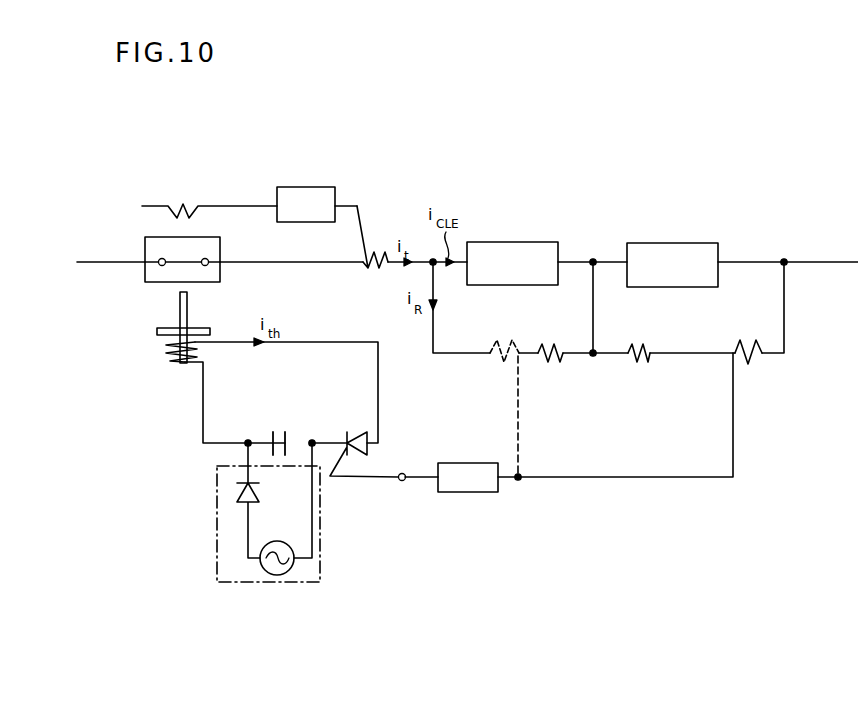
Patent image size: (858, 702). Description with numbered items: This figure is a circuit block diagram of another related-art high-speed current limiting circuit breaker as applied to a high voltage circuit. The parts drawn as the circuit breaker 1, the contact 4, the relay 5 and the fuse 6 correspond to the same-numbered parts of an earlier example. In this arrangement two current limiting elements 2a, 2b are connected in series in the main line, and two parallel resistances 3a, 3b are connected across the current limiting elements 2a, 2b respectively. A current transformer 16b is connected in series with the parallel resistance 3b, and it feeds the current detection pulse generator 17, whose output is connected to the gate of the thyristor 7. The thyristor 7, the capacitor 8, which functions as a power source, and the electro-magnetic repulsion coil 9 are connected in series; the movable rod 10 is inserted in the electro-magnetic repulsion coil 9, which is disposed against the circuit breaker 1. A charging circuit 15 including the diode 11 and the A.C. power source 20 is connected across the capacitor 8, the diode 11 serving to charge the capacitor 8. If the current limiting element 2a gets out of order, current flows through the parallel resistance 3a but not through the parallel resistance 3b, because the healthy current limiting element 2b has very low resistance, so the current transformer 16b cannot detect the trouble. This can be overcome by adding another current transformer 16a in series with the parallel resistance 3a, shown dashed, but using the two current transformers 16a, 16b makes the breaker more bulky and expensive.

The circuit breaker 1 is at (145, 273).
The current limiting element 2a is at (520, 242).
The current limiting element 2b is at (671, 243).
The parallel resistance 3a is at (553, 362).
The parallel resistance 3b is at (637, 362).
The part corresponding to FIG. 5 4 is at (373, 254).
The relay 5 is at (307, 187).
The part corresponding to FIG. 5 6 is at (184, 205).
The thyristor 7 is at (357, 432).
The capacitor 8 is at (273, 432).
The electro-magnetic repulsion coil 9 is at (176, 358).
The movable rod 10 is at (188, 305).
The diode 11 is at (237, 495).
The circuit 15 is at (217, 470).
The current transformer 16a is at (503, 362).
The current transformer 16b is at (752, 366).
The current detection pulse generator 17 is at (478, 492).
The A.C. power source 20 is at (289, 574).